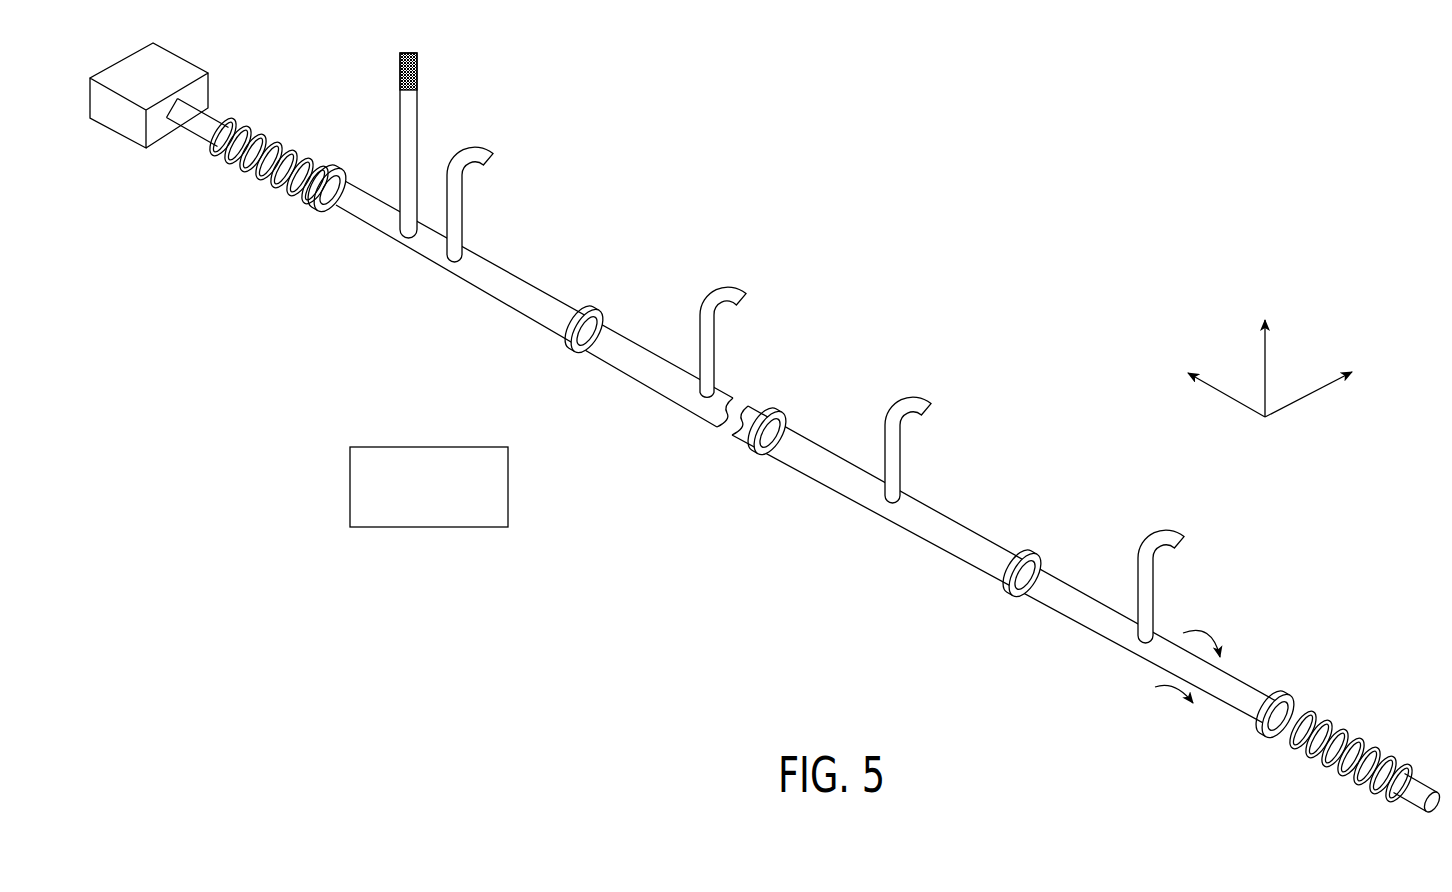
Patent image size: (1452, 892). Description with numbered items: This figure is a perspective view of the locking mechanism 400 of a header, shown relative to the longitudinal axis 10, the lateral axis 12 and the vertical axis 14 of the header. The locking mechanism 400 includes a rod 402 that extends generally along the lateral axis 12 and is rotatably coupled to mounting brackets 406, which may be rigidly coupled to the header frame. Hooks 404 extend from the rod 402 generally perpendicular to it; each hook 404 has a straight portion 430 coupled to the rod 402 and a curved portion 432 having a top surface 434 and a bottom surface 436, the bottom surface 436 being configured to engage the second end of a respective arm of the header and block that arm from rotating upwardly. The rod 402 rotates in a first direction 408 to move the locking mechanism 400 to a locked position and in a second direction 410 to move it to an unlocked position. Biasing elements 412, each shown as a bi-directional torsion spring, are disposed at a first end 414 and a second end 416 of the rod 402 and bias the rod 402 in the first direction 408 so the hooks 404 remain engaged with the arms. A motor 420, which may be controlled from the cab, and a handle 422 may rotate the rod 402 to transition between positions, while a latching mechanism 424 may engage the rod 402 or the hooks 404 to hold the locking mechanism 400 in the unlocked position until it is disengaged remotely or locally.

The locking mechanism 400 is at (989, 167).
The rod 402 is at (935, 536).
The hooks 404 is at (494, 206).
The mounting brackets 406 is at (326, 220).
The first direction 408 is at (1195, 632).
The second direction 410 is at (1156, 688).
The biasing elements 412 is at (247, 178).
The first end 414 is at (301, 130).
The second end 416 is at (1407, 723).
The motor 420 is at (192, 62).
The handle 422 is at (418, 108).
The latching mechanism 424 is at (350, 490).
The straight portion 430 is at (703, 330).
The curved portion 432 is at (712, 303).
The top surface 434 is at (722, 284).
The bottom surface 436 is at (727, 313).
The longitudinal axis 10 is at (1307, 392).
The lateral axis 12 is at (1246, 405).
The vertical axis 14 is at (1262, 378).